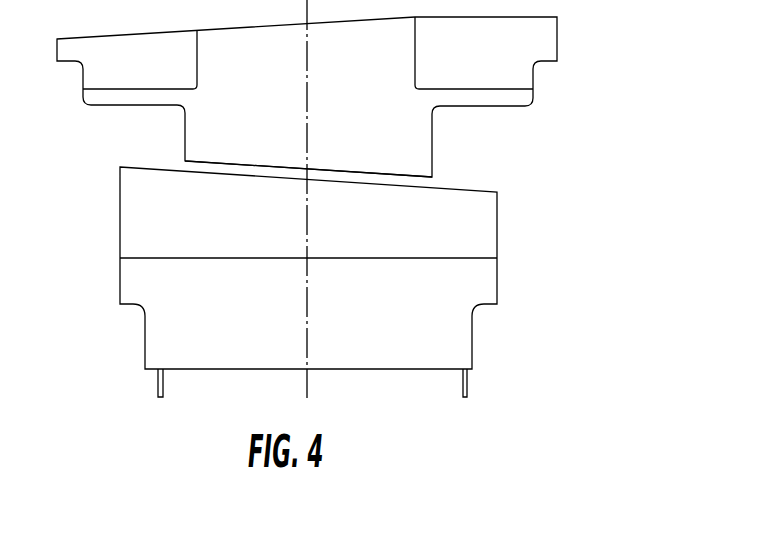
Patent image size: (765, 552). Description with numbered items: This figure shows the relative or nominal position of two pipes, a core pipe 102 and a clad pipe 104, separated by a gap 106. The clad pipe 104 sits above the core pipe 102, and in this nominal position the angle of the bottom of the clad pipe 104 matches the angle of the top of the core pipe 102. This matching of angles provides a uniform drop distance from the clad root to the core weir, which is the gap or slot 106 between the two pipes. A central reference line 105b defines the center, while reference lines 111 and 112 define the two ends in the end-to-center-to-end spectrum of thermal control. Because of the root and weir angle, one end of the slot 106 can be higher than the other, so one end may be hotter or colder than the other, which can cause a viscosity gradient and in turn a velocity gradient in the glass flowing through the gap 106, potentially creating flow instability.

The core pipe 102 is at (497, 246).
The clad pipe 104 is at (557, 38).
The reference line 105b is at (309, 385).
The gap 106 is at (432, 178).
The reference line 111 is at (155, 392).
The reference line 112 is at (468, 388).